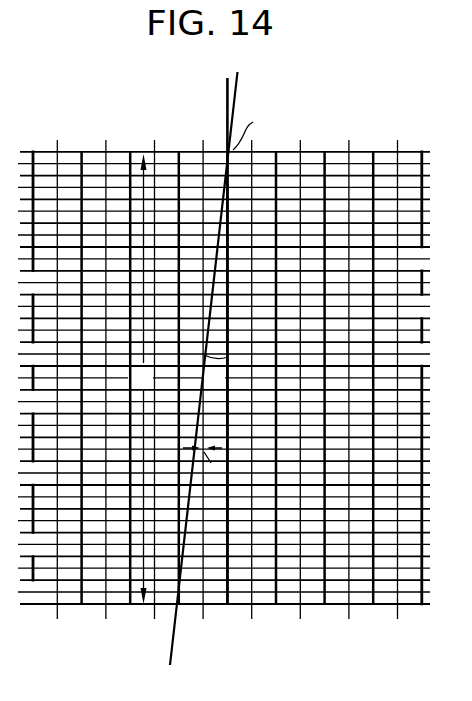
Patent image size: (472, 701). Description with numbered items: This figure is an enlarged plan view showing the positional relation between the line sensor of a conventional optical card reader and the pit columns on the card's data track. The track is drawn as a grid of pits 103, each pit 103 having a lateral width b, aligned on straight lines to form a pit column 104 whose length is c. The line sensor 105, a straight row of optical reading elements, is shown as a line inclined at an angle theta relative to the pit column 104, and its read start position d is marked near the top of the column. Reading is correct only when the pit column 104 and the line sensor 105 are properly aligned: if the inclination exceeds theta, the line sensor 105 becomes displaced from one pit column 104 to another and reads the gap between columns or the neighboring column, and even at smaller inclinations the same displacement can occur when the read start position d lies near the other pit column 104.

The pit 103 is at (203, 160).
The pit column 104 is at (203, 152).
The line sensor 105 is at (236, 94).